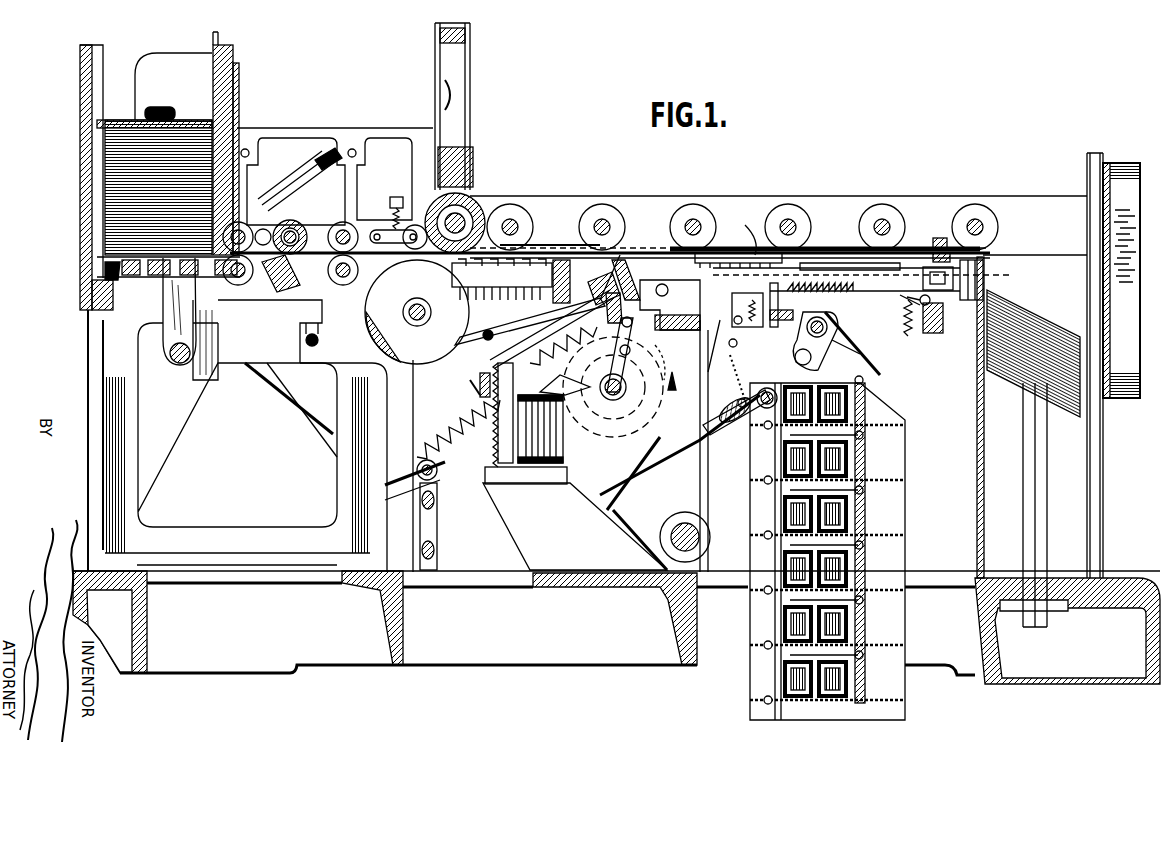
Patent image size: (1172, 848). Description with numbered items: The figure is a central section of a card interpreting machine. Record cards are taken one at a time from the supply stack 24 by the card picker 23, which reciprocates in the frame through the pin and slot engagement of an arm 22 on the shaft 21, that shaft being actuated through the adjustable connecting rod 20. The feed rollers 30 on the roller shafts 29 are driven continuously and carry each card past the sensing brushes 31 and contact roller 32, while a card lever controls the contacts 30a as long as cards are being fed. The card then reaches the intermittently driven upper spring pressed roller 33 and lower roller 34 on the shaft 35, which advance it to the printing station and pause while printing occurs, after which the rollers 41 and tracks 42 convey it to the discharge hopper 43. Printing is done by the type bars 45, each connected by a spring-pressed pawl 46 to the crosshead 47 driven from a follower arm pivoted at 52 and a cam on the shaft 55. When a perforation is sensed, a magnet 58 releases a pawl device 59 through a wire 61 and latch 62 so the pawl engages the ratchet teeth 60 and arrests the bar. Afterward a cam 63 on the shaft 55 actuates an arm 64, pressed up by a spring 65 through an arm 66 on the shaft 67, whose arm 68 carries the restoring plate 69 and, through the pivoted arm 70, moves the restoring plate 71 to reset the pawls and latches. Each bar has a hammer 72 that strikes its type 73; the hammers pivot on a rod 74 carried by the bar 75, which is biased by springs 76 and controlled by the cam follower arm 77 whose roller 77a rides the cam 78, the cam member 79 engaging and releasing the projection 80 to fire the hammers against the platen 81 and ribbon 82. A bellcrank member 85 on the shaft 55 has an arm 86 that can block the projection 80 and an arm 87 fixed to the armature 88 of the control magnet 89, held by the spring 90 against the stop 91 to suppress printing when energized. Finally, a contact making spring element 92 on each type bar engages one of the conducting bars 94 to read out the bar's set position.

The adjustable connecting rod 20 is at (290, 400).
The shaft 21 is at (177, 363).
The arm 22 is at (168, 300).
The card picker 23 is at (122, 268).
The supply stack 24 is at (118, 188).
The roller shaft 29 is at (355, 240).
The feed roller 30 is at (335, 228).
The contacts 30a is at (290, 195).
The sensing brush 31 is at (290, 300).
The contact roller 32 is at (275, 222).
The upper spring pressed roller 33 is at (417, 225).
The lower roller 34 is at (372, 350).
The shaft 35 is at (403, 312).
The roller 41 is at (592, 210).
The track 42 is at (552, 248).
The discharge hopper 43 is at (1035, 318).
The type bar 45 is at (780, 278).
The spring-pressed pawl 46 is at (905, 298).
The crosshead 47 is at (936, 334).
The pivot 52 is at (705, 540).
The shaft 55 is at (637, 503).
The magnet 58 is at (840, 440).
The pawl device 59 is at (786, 305).
The ratchet teeth 60 is at (865, 296).
The wire 61 is at (770, 460).
The latch 62 is at (745, 308).
The cam 63 is at (560, 420).
The arm 64 is at (462, 475).
The spring 65 is at (735, 392).
The arm 66 is at (734, 422).
The shaft 67 is at (735, 425).
The arm 68 is at (818, 362).
The restoring plate 69 is at (859, 345).
The pivoted arm 70 is at (858, 348).
The restoring plate 71 is at (714, 346).
The hammer 72 is at (530, 321).
The type 73 is at (510, 292).
The rod 74 is at (628, 250).
The bar 75 is at (638, 262).
The spring 76 is at (436, 445).
The cam follower arm 77 is at (644, 301).
The roller 77a is at (635, 354).
The cam 78 is at (568, 303).
The cam member 79 is at (690, 436).
The projection 80 is at (673, 362).
The printing platen 81 is at (472, 205).
The ribbon 82 is at (462, 110).
The bellcrank member 85 is at (598, 415).
The arm 86 is at (685, 383).
The arm 87 is at (478, 392).
The armature 88 is at (556, 346).
The control magnet 89 is at (540, 478).
The spring 90 is at (498, 440).
The stop 91 is at (478, 378).
The contact making spring element 92 is at (845, 275).
The conducting bar 94 is at (747, 227).